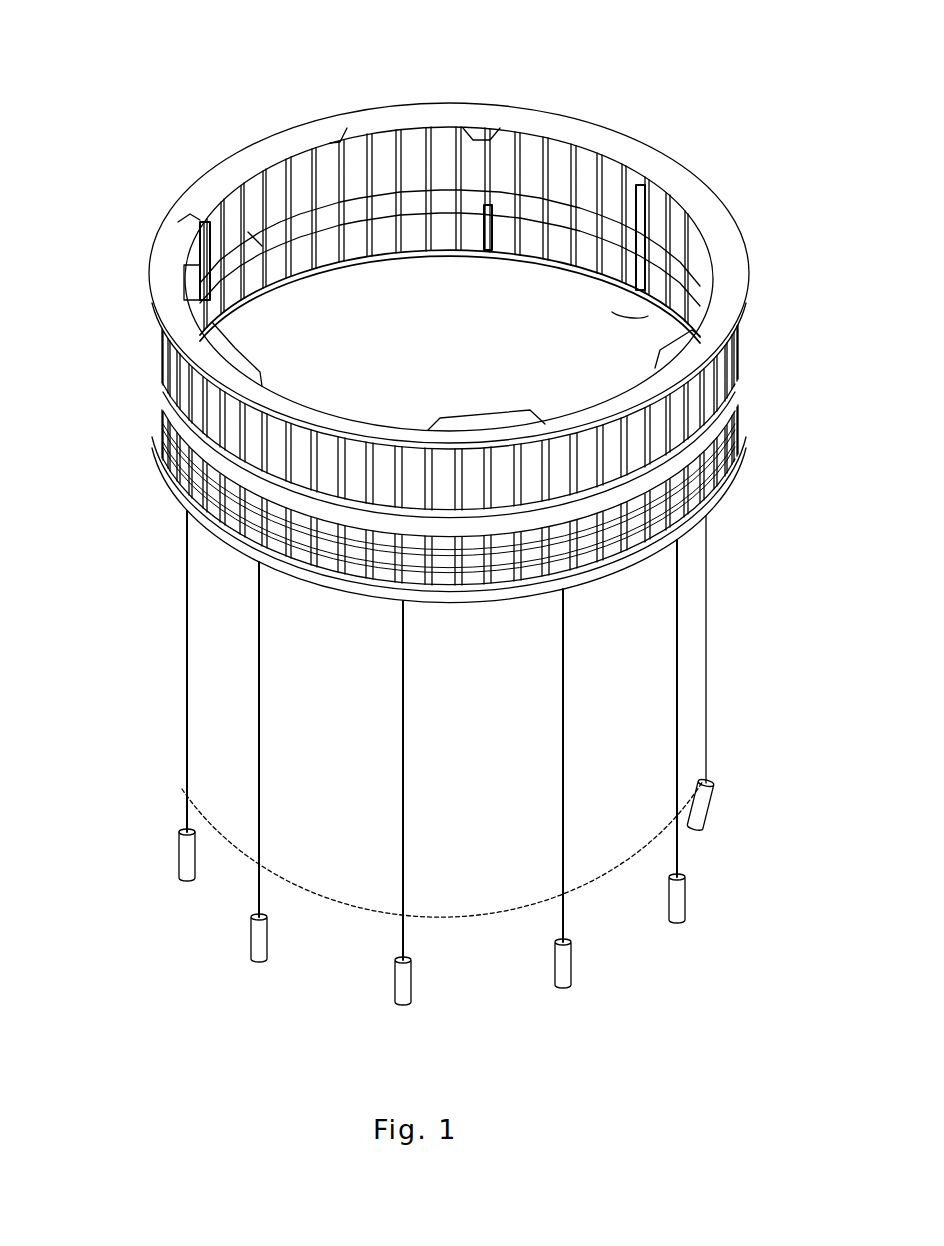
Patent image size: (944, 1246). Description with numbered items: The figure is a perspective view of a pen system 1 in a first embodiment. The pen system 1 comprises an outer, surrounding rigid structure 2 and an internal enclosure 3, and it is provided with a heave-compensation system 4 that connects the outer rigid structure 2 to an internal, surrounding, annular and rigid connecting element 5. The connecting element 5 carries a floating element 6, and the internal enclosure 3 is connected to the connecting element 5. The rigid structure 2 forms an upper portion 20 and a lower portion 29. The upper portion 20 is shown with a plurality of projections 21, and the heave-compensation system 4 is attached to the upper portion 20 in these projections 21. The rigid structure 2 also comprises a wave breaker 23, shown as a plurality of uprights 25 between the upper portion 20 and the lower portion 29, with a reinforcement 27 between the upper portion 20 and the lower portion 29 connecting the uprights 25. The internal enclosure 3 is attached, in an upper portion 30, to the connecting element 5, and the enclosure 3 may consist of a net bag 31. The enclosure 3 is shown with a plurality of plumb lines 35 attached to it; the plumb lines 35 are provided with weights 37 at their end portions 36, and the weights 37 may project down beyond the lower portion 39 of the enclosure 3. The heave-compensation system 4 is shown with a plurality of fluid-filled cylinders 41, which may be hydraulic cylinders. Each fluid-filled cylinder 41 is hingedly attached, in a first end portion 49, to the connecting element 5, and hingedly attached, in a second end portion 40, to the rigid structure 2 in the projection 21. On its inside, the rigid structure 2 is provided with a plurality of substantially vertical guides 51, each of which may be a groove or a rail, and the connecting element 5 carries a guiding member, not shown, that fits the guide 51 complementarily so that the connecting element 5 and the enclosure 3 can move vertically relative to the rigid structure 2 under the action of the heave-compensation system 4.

The pen system 1 is at (213, 102).
The outer, surrounding rigid structure 2 is at (167, 308).
The internal enclosure 3 is at (222, 600).
The heave-compensation system 4 is at (323, 178).
The connecting element 5 is at (263, 245).
The floating element 6 is at (183, 220).
The upper portion 20 is at (257, 382).
The projections 21 is at (258, 394).
The wave breaker 23 is at (667, 407).
The uprights 25 is at (643, 437).
The reinforcement 27 is at (647, 485).
The lower portion 29 is at (196, 518).
The upper portion 30 is at (610, 312).
The net bag 31 is at (238, 633).
The plumb lines 35 is at (262, 715).
The end portions 36 is at (183, 830).
The weights 37 is at (187, 848).
The lower portion 39 is at (223, 817).
The second end portion 40 is at (640, 192).
The fluid-filled cylinders 41 is at (643, 237).
The first end portion 49 is at (640, 283).
The guides 51 is at (197, 287).